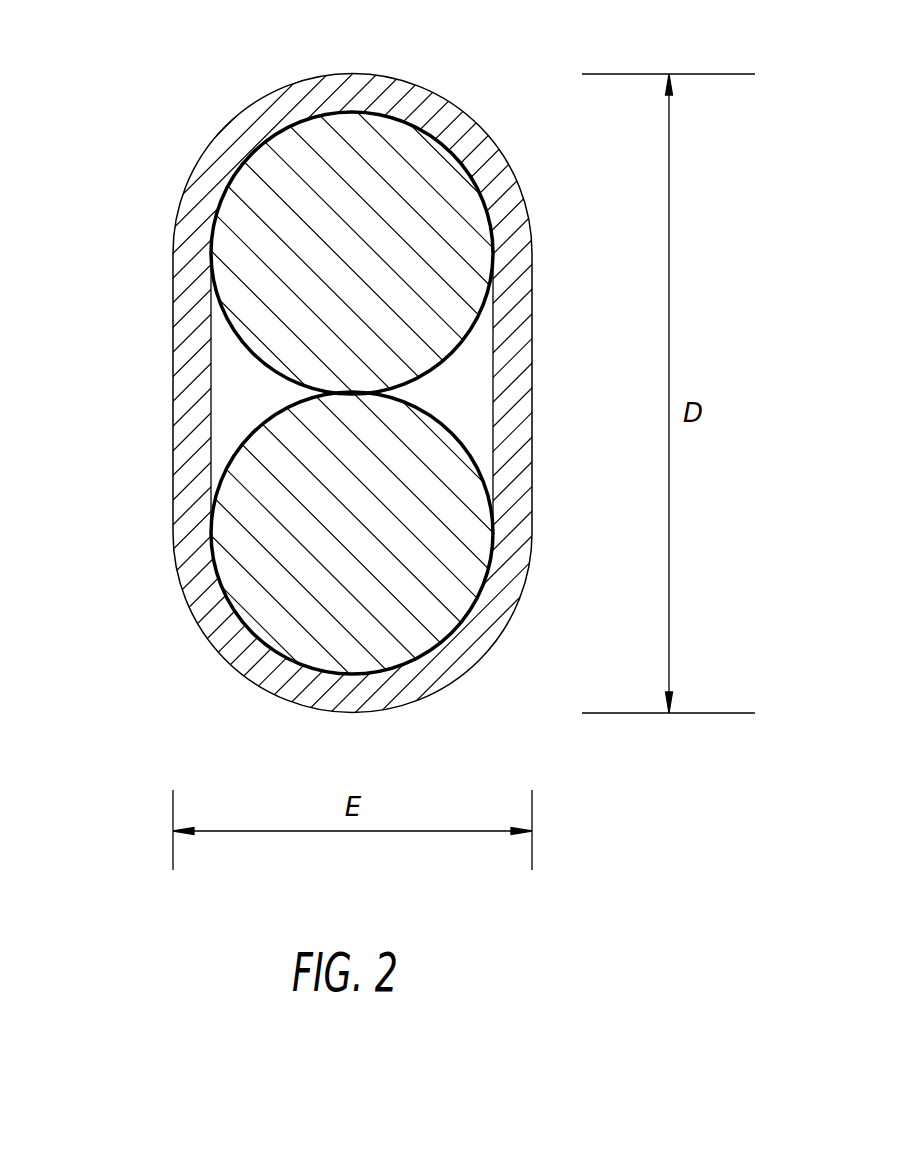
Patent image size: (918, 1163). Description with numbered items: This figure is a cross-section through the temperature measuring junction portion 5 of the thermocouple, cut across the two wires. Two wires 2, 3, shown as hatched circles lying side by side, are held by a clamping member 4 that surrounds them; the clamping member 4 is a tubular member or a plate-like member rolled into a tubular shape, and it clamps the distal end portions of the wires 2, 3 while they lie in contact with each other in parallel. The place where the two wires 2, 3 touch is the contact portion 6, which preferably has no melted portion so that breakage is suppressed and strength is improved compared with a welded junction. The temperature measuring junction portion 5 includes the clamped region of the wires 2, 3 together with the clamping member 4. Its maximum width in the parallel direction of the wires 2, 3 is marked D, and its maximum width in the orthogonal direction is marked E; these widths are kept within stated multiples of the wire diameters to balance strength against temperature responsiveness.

The wire 2 is at (232, 350).
The wire 3 is at (246, 447).
The clamping member 4 is at (307, 78).
The temperature measuring junction portion 5 is at (223, 120).
The contact portion 6 is at (352, 395).